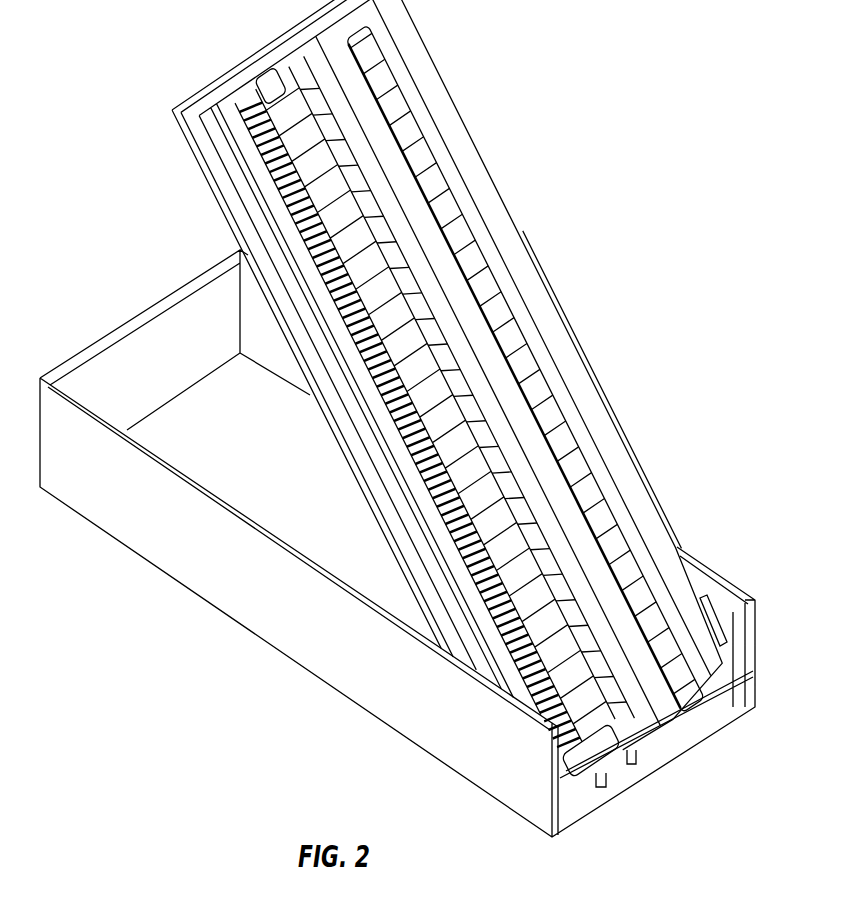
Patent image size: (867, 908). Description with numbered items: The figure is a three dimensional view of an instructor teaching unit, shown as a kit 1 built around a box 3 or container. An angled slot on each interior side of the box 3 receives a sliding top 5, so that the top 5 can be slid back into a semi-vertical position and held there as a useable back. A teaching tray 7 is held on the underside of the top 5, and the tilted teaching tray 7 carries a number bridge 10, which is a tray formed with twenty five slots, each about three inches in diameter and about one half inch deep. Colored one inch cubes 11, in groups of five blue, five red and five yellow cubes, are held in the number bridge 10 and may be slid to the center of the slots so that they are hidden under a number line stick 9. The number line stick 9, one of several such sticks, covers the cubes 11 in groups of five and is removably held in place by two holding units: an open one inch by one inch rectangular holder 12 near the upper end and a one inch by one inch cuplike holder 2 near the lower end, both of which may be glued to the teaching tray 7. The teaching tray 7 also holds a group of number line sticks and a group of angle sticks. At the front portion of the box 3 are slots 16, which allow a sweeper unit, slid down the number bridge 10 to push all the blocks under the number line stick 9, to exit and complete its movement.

The kit 1 is at (163, 236).
The holder 2 is at (607, 748).
The box 3 is at (110, 535).
The top 5 is at (180, 133).
The teaching tray 7 is at (457, 180).
The number line stick 9 is at (260, 108).
The number bridge 10 is at (252, 205).
The one inch cubes 11 is at (355, 335).
The holder 12 is at (273, 97).
The slots 16 is at (603, 780).